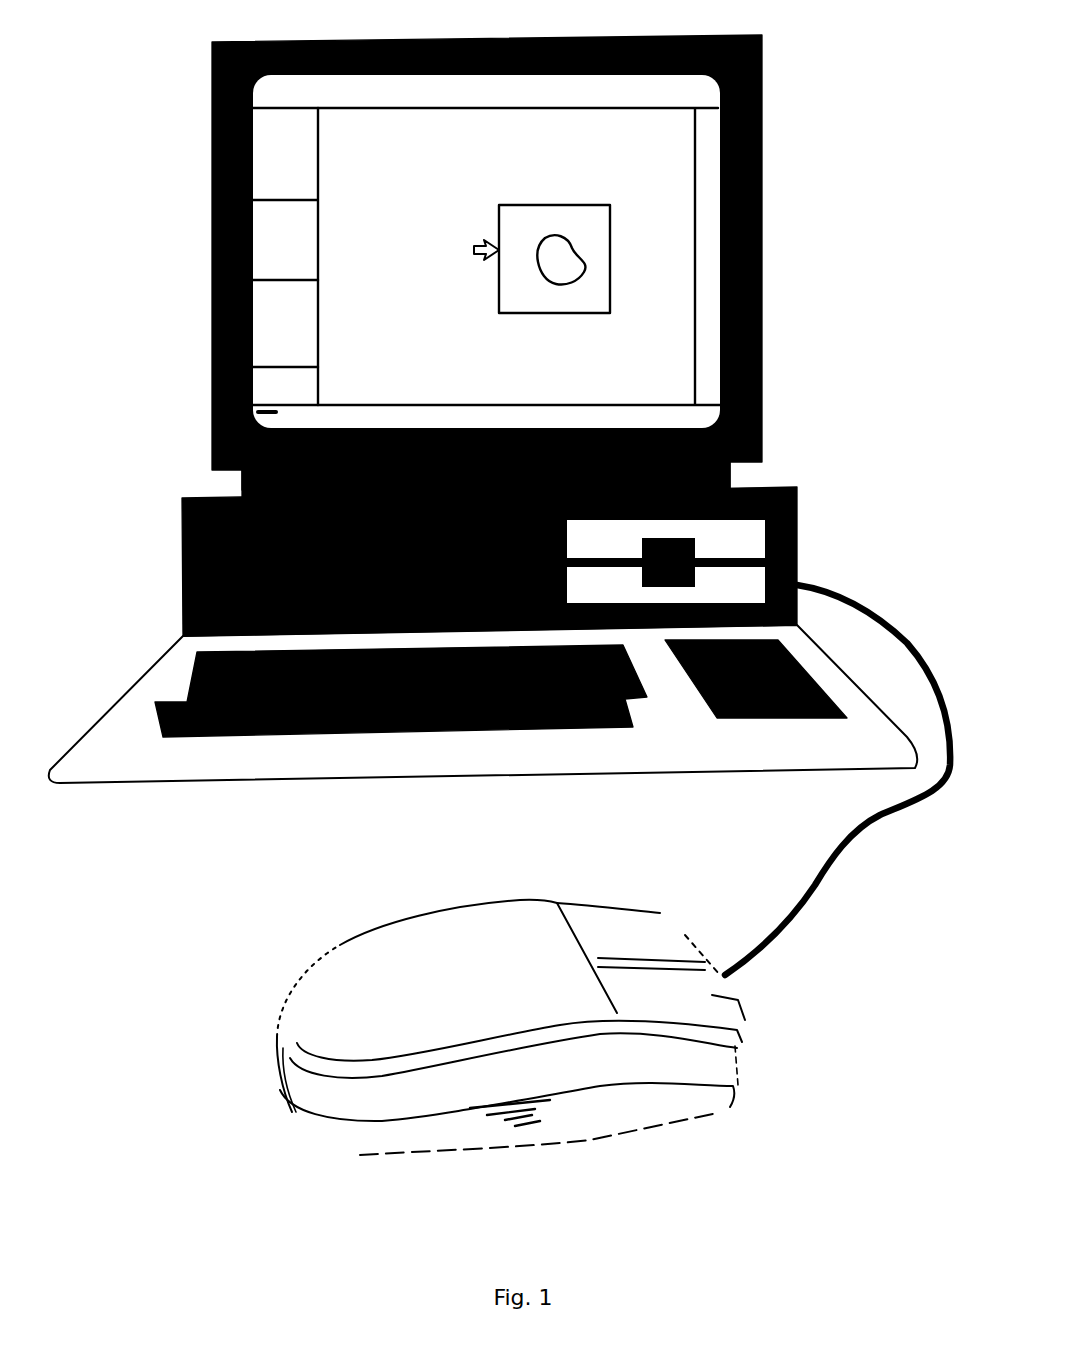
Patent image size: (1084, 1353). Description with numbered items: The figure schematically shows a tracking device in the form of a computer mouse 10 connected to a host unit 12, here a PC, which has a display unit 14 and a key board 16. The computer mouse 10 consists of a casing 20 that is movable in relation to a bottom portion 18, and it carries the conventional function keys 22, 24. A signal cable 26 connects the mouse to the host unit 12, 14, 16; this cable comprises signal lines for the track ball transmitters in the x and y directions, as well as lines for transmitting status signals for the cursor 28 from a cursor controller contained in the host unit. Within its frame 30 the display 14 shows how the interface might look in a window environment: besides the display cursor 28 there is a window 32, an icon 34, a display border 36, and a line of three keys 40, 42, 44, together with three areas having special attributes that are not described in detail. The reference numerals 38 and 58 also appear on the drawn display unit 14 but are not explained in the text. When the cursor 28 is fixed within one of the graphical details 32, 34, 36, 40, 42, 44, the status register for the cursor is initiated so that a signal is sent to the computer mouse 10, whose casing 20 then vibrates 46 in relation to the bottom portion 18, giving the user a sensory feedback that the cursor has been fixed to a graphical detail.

The computer mouse 10 is at (495, 1055).
The host unit 12 is at (800, 500).
The display unit 14 is at (763, 163).
The key board 16 is at (158, 672).
The bottom portion 18 is at (348, 1142).
The casing 20 is at (294, 1074).
The function key 22 is at (624, 928).
The function key 24 is at (700, 1005).
The signal cable 26 is at (796, 884).
The cursor 28 is at (479, 266).
The frame 30 is at (764, 66).
The window 32 is at (516, 206).
The icon 34 is at (584, 272).
The display border 36 is at (390, 122).
The monitor bezel 38 is at (708, 267).
The key 40 is at (318, 162).
The key 42 is at (319, 232).
The key 44 is at (320, 312).
The vibration 46 is at (485, 1138).
The display screen 58 is at (533, 28).